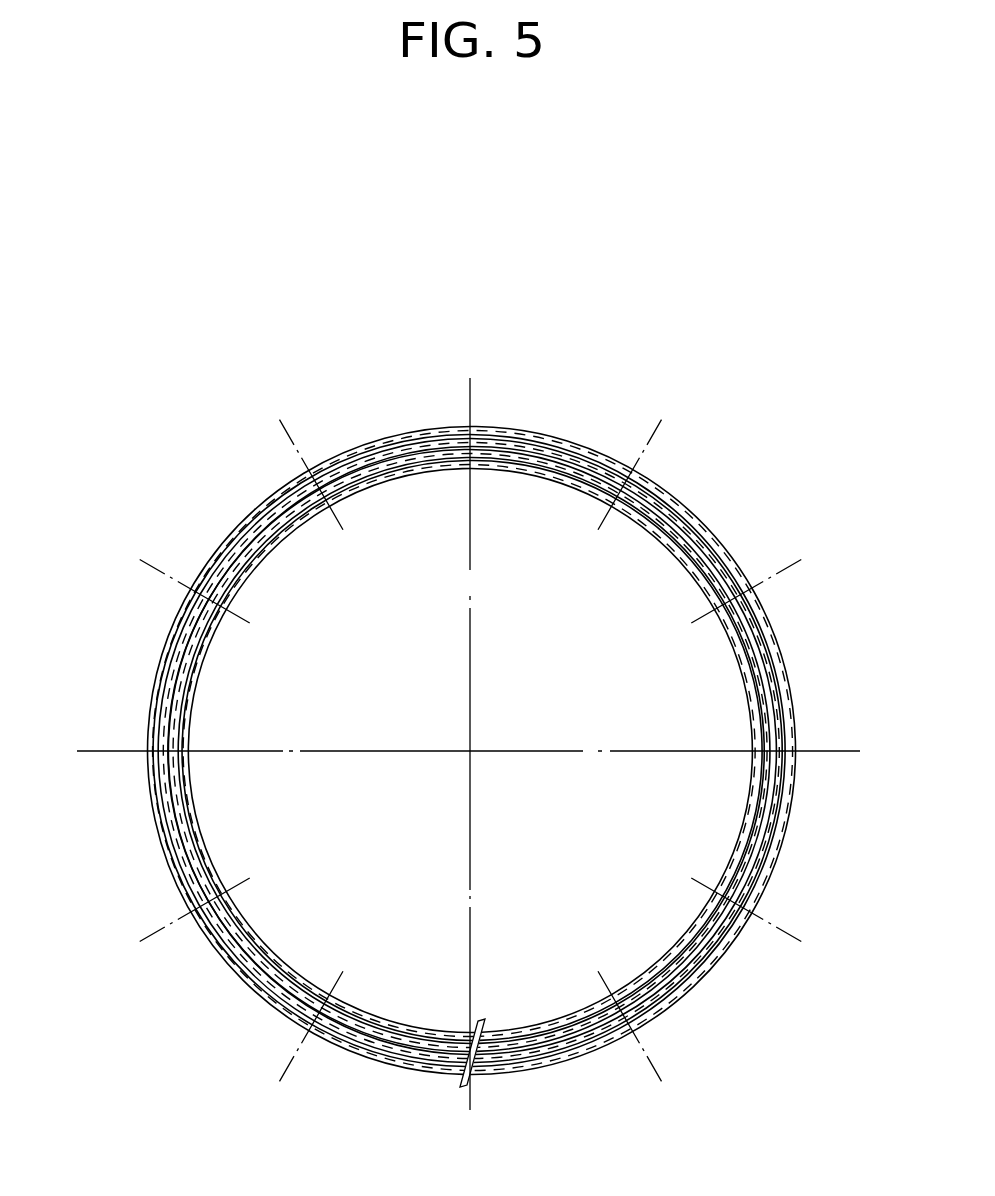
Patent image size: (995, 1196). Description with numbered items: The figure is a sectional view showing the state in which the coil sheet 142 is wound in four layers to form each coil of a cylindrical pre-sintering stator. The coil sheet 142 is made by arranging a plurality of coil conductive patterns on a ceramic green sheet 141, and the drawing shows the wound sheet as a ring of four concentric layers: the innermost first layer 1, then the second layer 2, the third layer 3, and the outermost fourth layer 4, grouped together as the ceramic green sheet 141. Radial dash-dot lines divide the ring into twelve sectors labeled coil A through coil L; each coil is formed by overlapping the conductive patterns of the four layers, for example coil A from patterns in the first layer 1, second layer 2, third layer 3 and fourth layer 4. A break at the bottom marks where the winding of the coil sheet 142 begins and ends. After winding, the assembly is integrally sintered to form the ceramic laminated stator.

The ceramic green sheet 141 is at (474, 641).
The coil sheet 142 is at (310, 463).
The first layer 1 is at (500, 461).
The second layer 2 is at (489, 450).
The third layer 3 is at (485, 438).
The fourth layer 4 is at (476, 428).